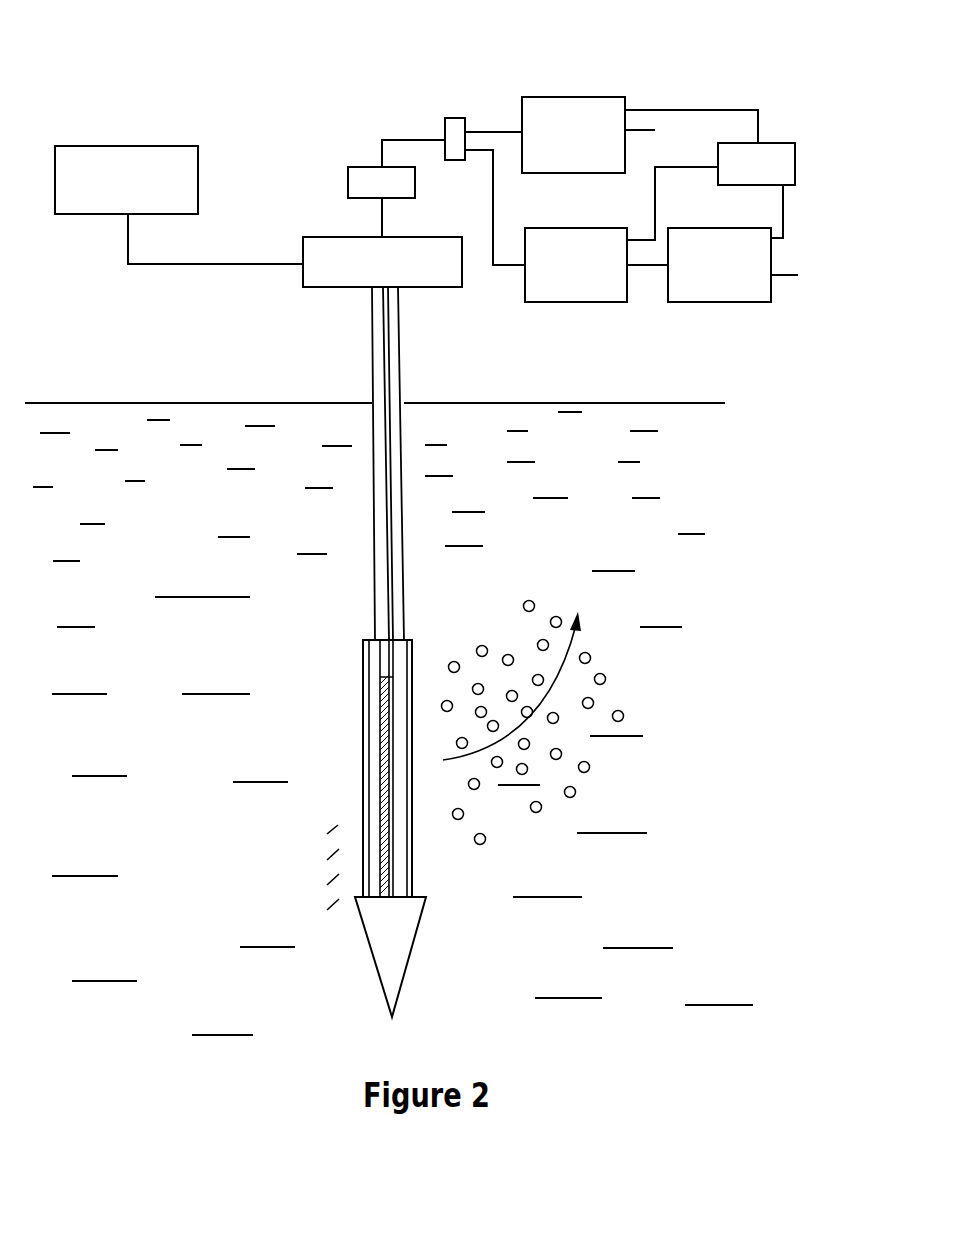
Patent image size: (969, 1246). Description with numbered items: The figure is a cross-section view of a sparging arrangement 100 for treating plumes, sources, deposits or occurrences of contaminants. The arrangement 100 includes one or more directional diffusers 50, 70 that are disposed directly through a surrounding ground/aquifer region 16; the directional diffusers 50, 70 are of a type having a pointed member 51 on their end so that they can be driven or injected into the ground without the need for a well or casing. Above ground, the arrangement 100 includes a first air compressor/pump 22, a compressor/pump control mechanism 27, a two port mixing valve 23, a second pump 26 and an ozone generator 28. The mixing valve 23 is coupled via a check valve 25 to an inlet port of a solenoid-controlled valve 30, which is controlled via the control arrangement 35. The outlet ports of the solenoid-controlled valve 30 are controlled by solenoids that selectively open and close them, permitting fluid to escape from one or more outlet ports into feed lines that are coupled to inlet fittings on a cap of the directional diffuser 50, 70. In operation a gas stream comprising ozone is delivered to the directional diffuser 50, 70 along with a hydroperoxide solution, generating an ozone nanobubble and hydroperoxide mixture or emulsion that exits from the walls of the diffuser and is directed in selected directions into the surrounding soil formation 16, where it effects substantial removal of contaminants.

The sparging arrangement 100 is at (235, 110).
The control arrangement 35 is at (123, 146).
The solenoid-controlled valve 30 is at (308, 298).
The check valve 25 is at (415, 183).
The two port mixing valve 23 is at (457, 117).
The first air compressor/pump 22 is at (595, 97).
The second pump 26 is at (570, 302).
The compressor/pump control mechanism 27 is at (770, 143).
The ozone generator 28 is at (712, 302).
The ground/aquifer region 16 is at (162, 549).
The directional diffuser 50 is at (301, 775).
The directional diffuser 70 is at (356, 807).
The pointed member 51 is at (400, 932).